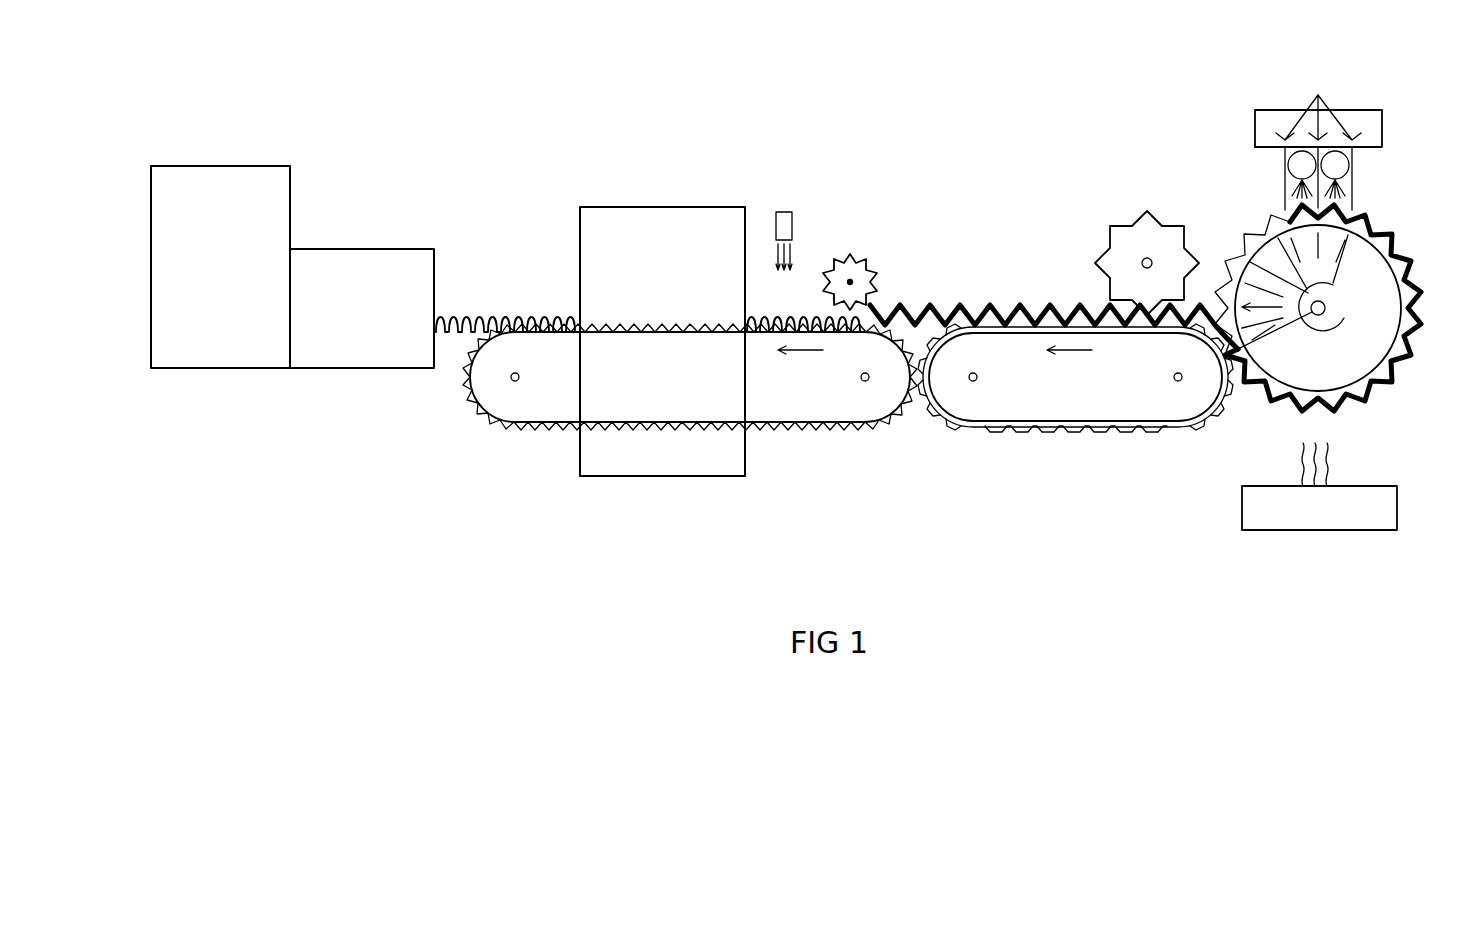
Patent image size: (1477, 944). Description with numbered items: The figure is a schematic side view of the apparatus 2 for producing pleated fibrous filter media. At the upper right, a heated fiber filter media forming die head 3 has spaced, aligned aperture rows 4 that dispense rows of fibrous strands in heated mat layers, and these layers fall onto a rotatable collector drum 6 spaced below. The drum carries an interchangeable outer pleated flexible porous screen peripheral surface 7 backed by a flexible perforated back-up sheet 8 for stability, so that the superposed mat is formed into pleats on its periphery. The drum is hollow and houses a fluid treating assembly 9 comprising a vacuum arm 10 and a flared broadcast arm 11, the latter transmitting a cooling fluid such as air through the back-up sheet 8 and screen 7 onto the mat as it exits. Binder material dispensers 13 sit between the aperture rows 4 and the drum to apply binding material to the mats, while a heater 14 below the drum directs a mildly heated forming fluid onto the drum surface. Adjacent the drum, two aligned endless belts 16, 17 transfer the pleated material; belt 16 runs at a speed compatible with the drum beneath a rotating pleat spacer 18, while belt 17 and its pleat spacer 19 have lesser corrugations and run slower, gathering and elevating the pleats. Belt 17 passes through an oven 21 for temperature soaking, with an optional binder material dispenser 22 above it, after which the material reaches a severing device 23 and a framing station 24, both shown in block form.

The apparatus 2 is at (1035, 187).
The die head 3 is at (1322, 114).
The aperture rows 4 is at (1318, 103).
The collector drum 6 is at (1335, 335).
The pleated flexible porous screen peripheral surface 7 is at (1248, 243).
The perforated back-up sheet 8 is at (1362, 228).
The fluid treating assembly 9 is at (1328, 316).
The vacuum arm 10 is at (1330, 245).
The flared broadcast arm 11 is at (1267, 340).
The binder material dispensers 13 is at (1288, 168).
The heater 14 is at (1250, 512).
The endless belt 16 is at (1105, 407).
The endless belt 17 is at (775, 408).
The pleat spacer 18 is at (1118, 240).
The pleat spacer 19 is at (858, 275).
The oven 21 is at (662, 341).
The binder material dispenser 22 is at (782, 205).
The severing device 23 is at (362, 308).
The framing station 24 is at (220, 267).